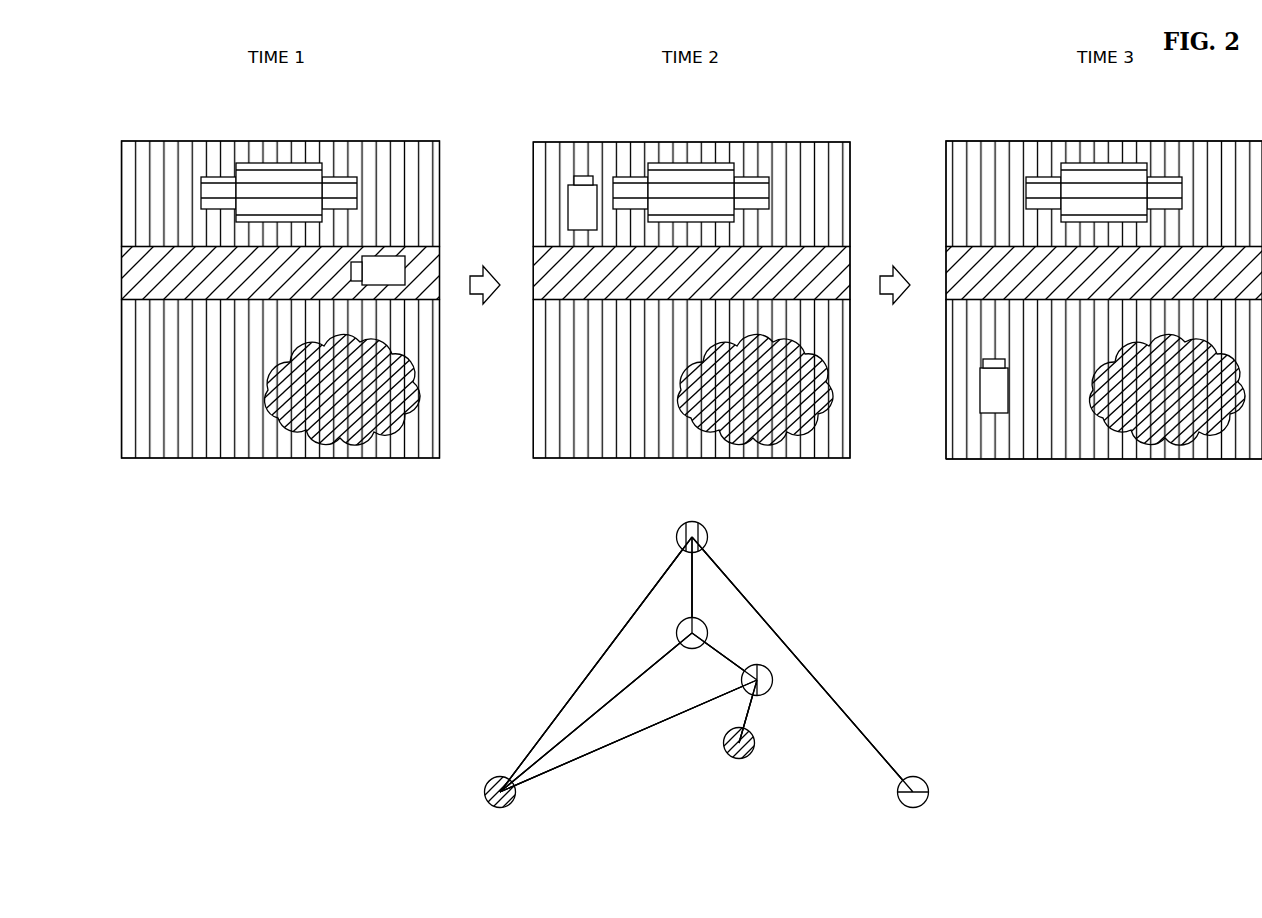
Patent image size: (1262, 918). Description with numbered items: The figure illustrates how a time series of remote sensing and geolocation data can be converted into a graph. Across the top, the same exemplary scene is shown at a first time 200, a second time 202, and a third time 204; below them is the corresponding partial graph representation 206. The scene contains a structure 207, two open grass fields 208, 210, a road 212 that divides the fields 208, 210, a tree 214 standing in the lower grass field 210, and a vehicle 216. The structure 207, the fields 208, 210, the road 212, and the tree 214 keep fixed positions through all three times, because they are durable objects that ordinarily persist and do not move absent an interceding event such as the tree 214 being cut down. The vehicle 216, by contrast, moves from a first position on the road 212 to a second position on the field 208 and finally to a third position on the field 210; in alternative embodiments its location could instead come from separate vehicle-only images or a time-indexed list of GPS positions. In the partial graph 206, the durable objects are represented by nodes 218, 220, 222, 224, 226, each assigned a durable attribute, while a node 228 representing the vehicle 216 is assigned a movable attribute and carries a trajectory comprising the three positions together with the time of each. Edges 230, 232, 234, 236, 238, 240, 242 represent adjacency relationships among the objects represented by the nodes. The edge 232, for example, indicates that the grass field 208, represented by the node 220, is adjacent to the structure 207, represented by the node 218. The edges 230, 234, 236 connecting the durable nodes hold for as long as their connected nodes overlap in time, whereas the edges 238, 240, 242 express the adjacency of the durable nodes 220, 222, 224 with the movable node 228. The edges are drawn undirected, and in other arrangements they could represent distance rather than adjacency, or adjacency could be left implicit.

The first time 200 is at (378, 102).
The second time 202 is at (788, 102).
The third time 204 is at (1188, 102).
The partial graph representation 206 is at (709, 653).
The structure 207 is at (278, 162).
The open grass field 208 is at (155, 162).
The open grass field 210 is at (190, 387).
The road 212 is at (421, 285).
The tree 214 is at (408, 373).
The vehicle 216 is at (389, 254).
The node 218 is at (927, 780).
The node 220 is at (704, 526).
The node 222 is at (766, 697).
The node 224 is at (488, 781).
The node 226 is at (727, 757).
The node 228 is at (677, 620).
The edge 230 is at (598, 656).
The edge 232 is at (806, 673).
The edge 234 is at (752, 716).
The edge 236 is at (718, 699).
The edge 238 is at (694, 588).
The edge 240 is at (718, 650).
The edge 242 is at (650, 664).